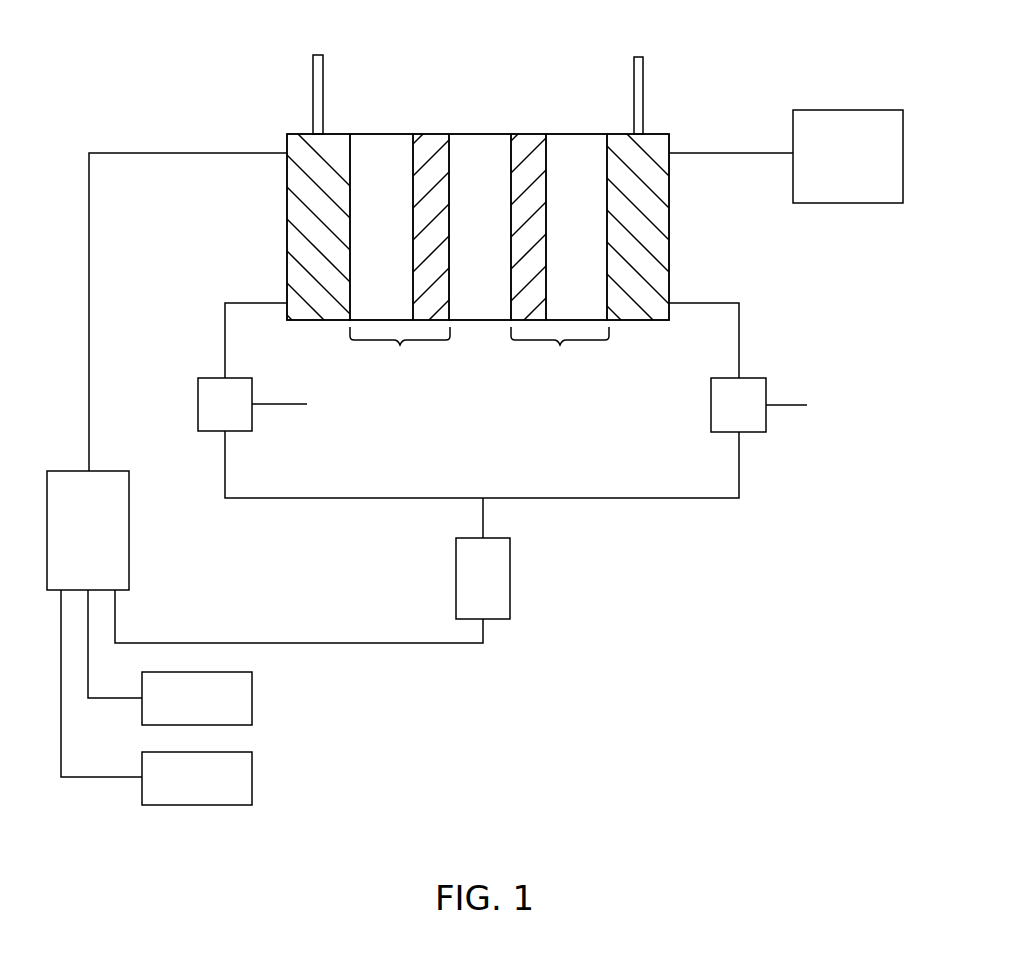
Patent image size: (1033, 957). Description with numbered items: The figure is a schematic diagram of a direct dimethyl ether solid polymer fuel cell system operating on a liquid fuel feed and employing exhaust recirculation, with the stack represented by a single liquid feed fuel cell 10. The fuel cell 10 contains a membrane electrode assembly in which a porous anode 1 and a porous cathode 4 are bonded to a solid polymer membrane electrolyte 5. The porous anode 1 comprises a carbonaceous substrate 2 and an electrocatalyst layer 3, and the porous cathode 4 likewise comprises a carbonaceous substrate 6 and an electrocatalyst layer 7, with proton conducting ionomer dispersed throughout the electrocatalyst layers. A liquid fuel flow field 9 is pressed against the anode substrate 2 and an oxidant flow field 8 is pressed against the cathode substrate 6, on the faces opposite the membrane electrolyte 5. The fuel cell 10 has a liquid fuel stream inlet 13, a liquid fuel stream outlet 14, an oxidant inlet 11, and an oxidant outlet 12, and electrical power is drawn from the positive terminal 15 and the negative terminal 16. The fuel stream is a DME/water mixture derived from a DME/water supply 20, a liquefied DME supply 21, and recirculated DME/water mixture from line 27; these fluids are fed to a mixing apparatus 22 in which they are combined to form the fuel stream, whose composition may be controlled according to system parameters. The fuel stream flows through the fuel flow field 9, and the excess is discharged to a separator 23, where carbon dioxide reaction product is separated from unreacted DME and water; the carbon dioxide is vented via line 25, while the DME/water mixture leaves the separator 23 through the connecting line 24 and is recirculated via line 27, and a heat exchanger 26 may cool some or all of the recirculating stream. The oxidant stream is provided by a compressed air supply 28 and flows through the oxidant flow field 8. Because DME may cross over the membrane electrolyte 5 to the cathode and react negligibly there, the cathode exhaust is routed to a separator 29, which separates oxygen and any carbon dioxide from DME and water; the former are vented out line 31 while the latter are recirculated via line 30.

The porous anode 1 is at (400, 356).
The carbonaceous substrate 2 is at (380, 163).
The electrocatalyst layer 3 is at (433, 165).
The porous cathode 4 is at (558, 356).
The solid polymer membrane electrolyte 5 is at (480, 302).
The carbonaceous substrate 6 is at (575, 162).
The electrocatalyst layer 7 is at (524, 160).
The oxidant flow field 8 is at (628, 305).
The liquid fuel flow field 9 is at (323, 305).
The liquid feed fuel cell 10 is at (686, 81).
The oxidant inlet 11 is at (707, 152).
The oxidant outlet 12 is at (707, 300).
The liquid fuel stream inlet 13 is at (260, 152).
The liquid fuel stream outlet 14 is at (258, 299).
The positive terminal 15 is at (637, 85).
The negative terminal 16 is at (320, 85).
The DME/water supply 20 is at (210, 778).
The liquefied DME supply 21 is at (210, 698).
The mixing apparatus 22 is at (102, 537).
The separator 23 is at (225, 407).
The conduit 24 is at (220, 455).
The line 25 is at (280, 410).
The heat exchanger 26 is at (482, 580).
The line 27 is at (422, 640).
The compressed air supply 28 is at (845, 138).
The separator 29 is at (738, 405).
The line 30 is at (740, 463).
The line 31 is at (792, 397).